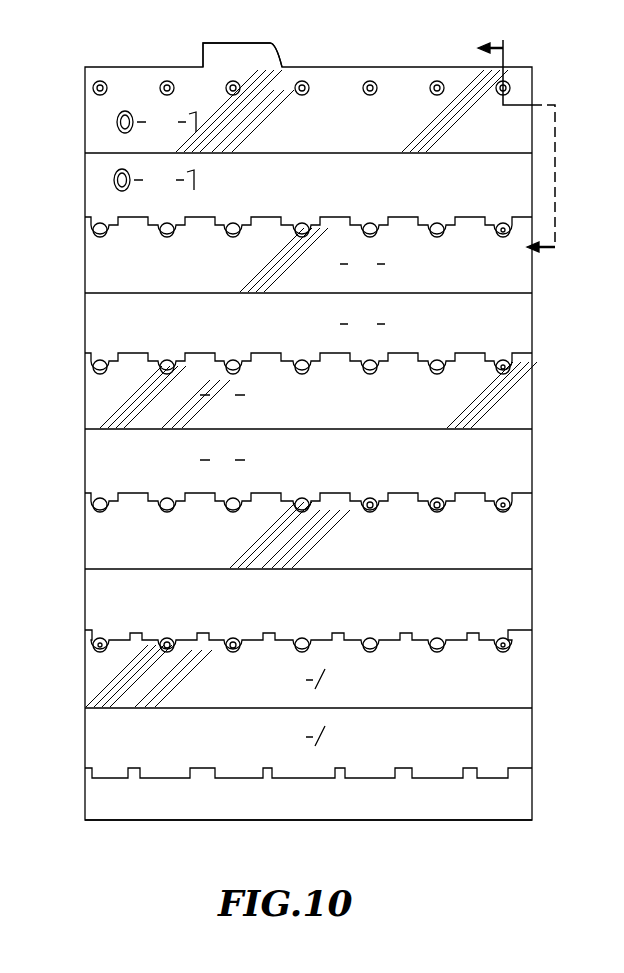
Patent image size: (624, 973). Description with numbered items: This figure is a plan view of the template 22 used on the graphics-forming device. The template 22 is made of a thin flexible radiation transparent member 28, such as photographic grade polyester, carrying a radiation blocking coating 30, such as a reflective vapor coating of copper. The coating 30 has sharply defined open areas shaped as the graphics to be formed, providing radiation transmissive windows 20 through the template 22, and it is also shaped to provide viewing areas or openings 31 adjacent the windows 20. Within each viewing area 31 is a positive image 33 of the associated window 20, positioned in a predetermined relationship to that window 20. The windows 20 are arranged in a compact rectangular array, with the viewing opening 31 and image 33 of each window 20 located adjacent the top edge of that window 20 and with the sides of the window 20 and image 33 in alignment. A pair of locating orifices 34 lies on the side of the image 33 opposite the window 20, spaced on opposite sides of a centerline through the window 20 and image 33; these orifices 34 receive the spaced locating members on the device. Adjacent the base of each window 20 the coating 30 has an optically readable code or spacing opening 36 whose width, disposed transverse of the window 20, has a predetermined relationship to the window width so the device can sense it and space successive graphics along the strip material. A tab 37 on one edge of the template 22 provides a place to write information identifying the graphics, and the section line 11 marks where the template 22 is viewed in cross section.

The section line 11- 11 is at (538, 150).
The radiation transmissive window 20 is at (258, 459).
The template 22 is at (443, 825).
The radiation transparent member 28 is at (85, 131).
The radiation blocking coating 30 is at (375, 196).
The viewing area 31 is at (375, 136).
The positive image 33 is at (260, 402).
The locating orifice 34 is at (165, 81).
The spacing opening 36 is at (194, 227).
The tab 37 is at (270, 43).